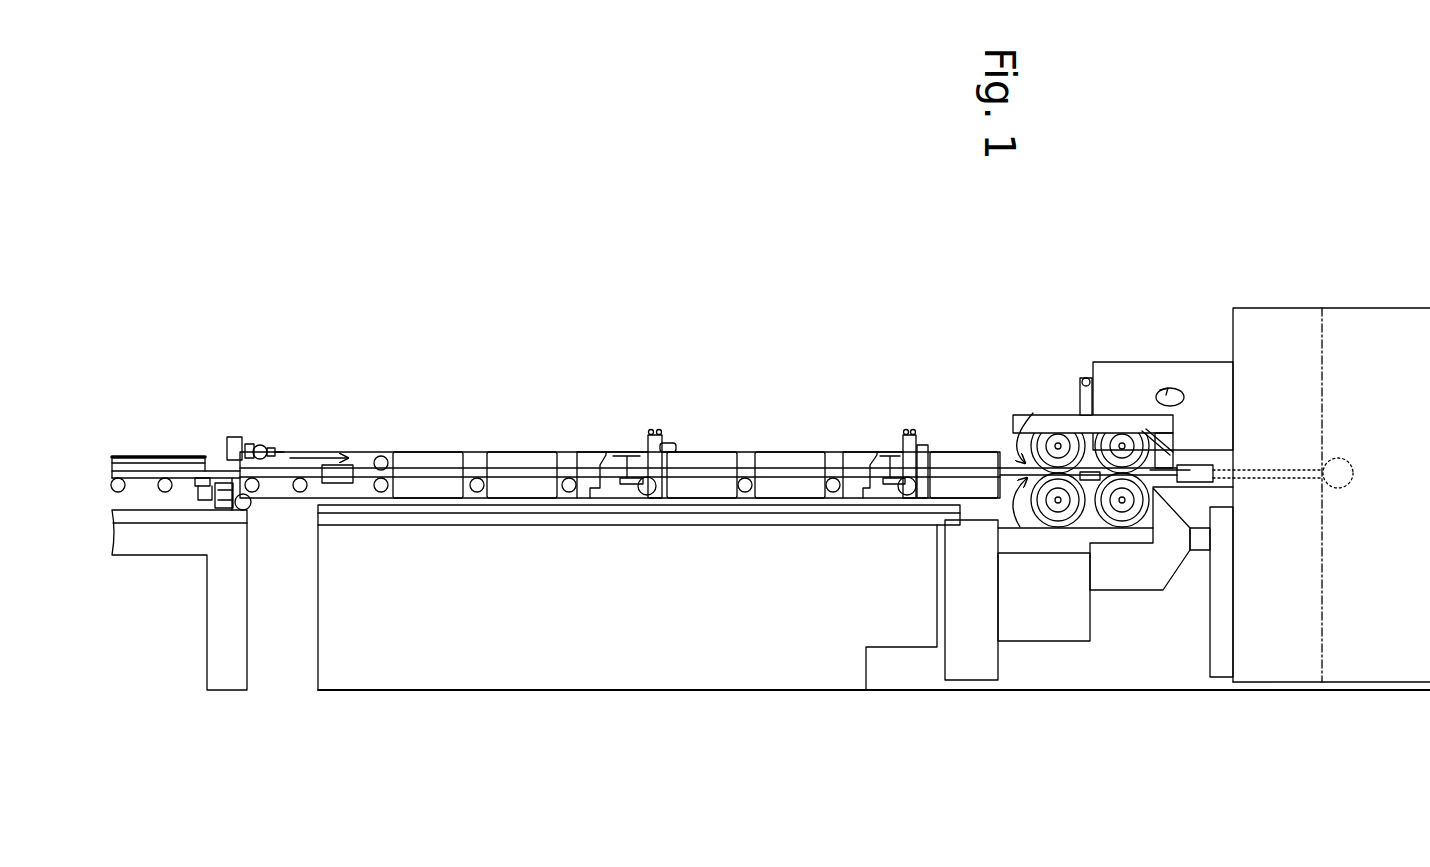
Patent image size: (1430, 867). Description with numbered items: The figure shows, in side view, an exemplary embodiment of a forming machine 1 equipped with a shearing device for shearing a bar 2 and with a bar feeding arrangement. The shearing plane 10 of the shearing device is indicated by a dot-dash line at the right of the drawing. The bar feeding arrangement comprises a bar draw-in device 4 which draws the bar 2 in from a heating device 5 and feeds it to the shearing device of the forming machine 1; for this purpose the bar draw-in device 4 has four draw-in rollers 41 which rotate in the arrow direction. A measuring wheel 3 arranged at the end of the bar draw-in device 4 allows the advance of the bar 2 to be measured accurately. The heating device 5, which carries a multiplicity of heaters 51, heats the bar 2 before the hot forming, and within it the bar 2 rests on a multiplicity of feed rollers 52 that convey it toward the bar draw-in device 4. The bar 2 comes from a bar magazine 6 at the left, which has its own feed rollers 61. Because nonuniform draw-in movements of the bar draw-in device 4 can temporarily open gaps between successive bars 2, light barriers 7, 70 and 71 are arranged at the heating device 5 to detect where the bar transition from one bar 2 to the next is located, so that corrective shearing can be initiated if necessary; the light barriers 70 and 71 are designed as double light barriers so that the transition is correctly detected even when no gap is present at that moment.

The forming machine 1 is at (1323, 243).
The bar 2 is at (365, 460).
The measuring wheel 3 is at (1176, 474).
The bar draw-in device 4 is at (1115, 527).
The draw-in rollers 41 is at (1118, 518).
The heating device 5 is at (643, 320).
The heaters 51 is at (598, 455).
The feed rollers 52 is at (478, 492).
The bar magazine 6 is at (181, 512).
The feed rollers 61 is at (165, 492).
The light barrier 7 is at (248, 445).
The light barrier 70 is at (664, 424).
The light barrier 71 is at (906, 423).
The shearing plane 10 is at (1325, 366).